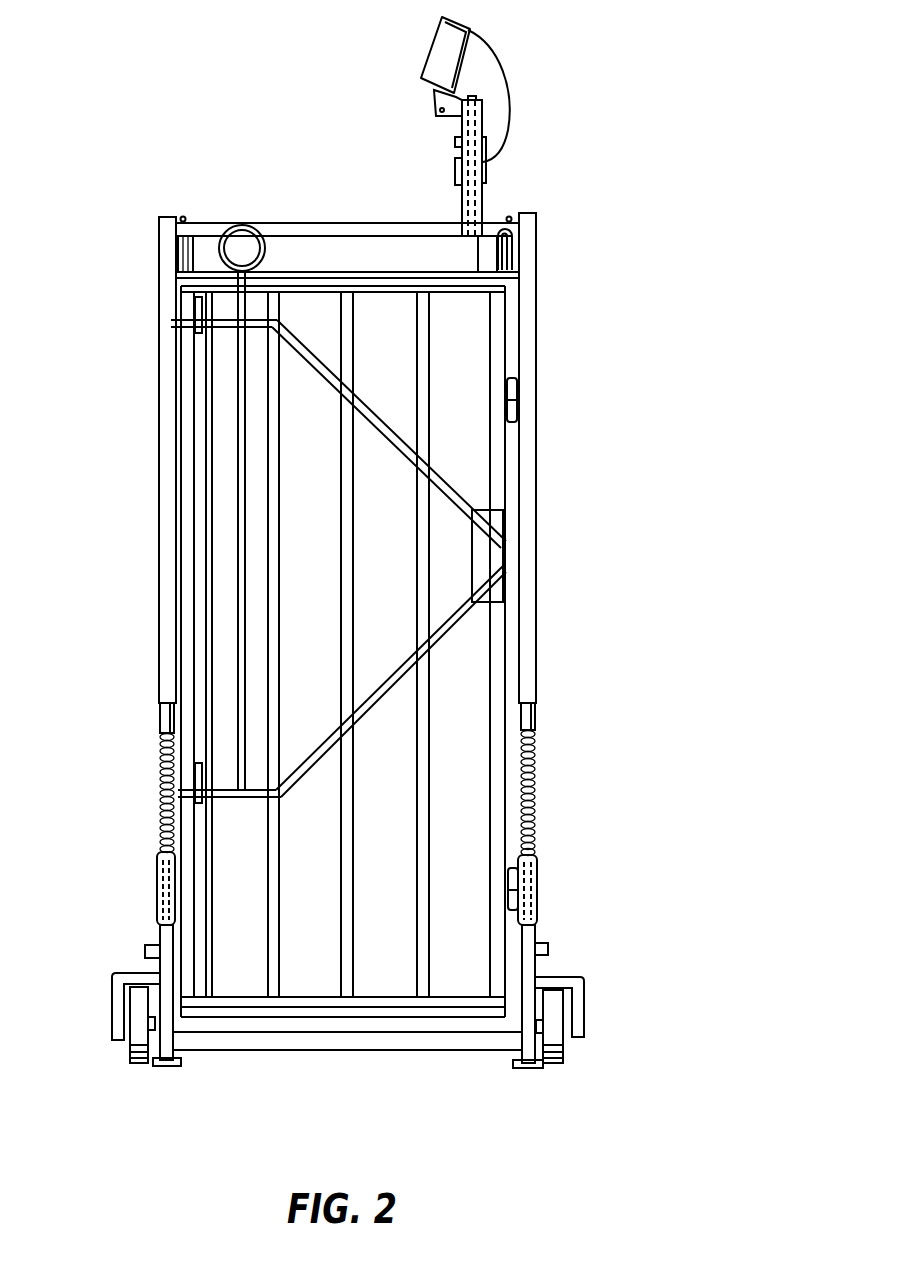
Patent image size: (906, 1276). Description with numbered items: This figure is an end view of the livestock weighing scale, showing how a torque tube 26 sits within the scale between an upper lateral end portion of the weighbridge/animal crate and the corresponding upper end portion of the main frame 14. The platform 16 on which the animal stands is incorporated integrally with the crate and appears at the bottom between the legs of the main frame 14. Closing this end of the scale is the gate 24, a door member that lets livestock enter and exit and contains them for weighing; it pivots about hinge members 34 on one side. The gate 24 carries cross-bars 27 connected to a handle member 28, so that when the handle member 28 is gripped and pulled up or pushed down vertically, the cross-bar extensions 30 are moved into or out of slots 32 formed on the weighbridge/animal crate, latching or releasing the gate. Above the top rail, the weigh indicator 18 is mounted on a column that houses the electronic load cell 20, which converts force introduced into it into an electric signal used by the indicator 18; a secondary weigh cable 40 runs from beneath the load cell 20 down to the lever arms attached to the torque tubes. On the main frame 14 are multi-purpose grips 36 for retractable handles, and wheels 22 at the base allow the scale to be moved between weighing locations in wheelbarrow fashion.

The main frame 14 is at (532, 474).
The platform 16 is at (318, 1008).
The weigh indicator 18 is at (426, 68).
The electronic load cell 20 is at (484, 176).
The wheels 22 is at (130, 1055).
The gate 24 is at (498, 348).
The torque tube 26 is at (358, 255).
The cross-bars 27 is at (372, 417).
The handle member 28 is at (261, 232).
The cross-bar extensions 30 is at (220, 330).
The slots 32 is at (197, 304).
The hinge members 34 is at (518, 405).
The multi-purpose grips 36 is at (156, 890).
The secondary weigh cable 40 is at (478, 207).